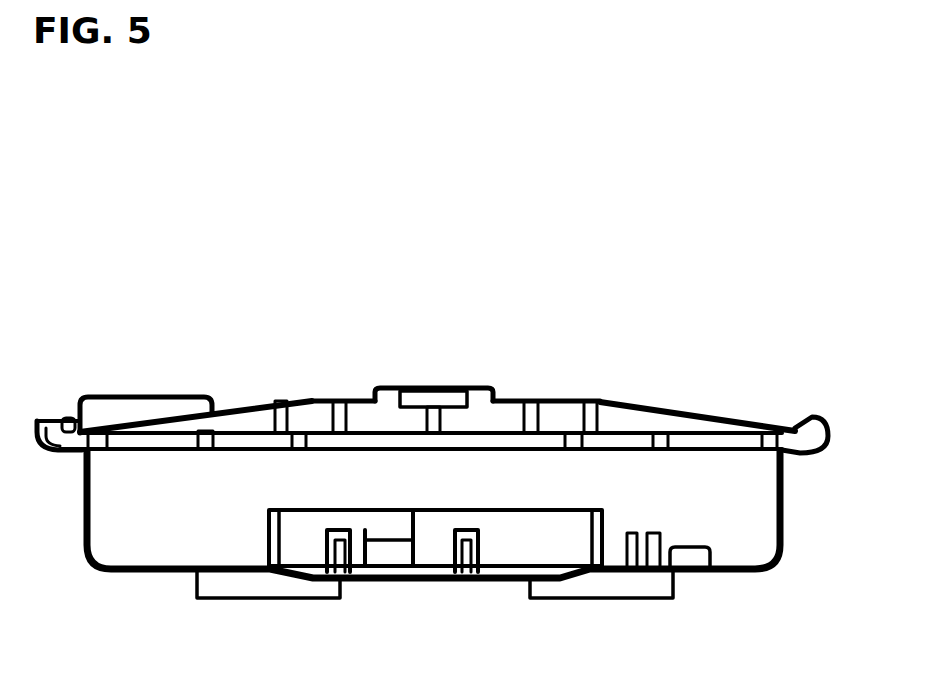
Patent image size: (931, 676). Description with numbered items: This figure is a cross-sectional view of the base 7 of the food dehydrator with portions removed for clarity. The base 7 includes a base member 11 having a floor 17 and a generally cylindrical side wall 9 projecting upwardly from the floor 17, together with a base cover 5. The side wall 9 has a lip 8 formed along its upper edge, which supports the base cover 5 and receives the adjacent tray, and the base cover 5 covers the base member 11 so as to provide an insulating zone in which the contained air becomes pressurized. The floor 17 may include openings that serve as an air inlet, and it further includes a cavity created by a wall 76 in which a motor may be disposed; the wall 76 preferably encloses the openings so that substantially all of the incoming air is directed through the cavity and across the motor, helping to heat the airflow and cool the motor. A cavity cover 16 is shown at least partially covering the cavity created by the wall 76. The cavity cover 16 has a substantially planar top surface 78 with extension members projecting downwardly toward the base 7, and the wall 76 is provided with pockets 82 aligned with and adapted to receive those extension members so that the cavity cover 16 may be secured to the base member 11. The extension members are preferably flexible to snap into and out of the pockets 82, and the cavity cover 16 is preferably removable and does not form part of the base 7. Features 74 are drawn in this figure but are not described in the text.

The base cover 5 is at (633, 388).
The base 7 is at (365, 280).
The lip 8 is at (50, 420).
The side wall 9 is at (88, 495).
The base member 11 is at (76, 535).
The cavity cover 16 is at (320, 509).
The floor 17 is at (196, 572).
The support posts 74 is at (450, 575).
The wall 76 is at (267, 528).
The top surface 78 is at (537, 538).
The pockets 82 is at (432, 530).